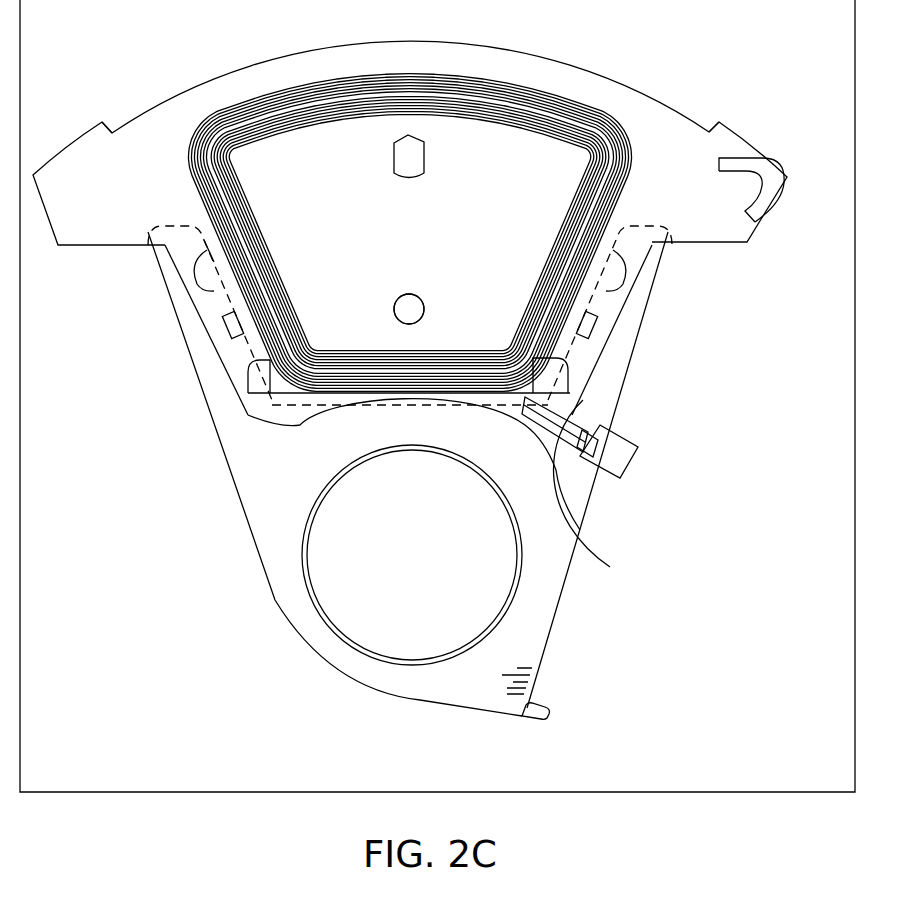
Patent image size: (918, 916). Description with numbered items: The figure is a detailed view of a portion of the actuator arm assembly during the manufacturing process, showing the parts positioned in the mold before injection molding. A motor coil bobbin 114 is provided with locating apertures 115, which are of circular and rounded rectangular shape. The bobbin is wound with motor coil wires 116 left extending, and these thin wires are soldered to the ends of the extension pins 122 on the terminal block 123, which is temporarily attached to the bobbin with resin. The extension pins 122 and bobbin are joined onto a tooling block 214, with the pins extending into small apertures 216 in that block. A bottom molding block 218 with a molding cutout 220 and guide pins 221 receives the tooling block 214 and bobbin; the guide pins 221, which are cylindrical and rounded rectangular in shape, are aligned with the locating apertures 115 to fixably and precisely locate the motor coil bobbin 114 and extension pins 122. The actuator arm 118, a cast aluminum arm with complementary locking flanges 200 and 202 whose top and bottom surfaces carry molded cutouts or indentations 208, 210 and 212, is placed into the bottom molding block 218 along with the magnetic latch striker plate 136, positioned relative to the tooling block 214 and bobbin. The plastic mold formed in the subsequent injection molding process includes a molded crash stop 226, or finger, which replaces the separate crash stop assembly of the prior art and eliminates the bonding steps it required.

The motor coil bobbin 114 is at (584, 113).
The locating apertures 115 is at (420, 297).
The motor coil wires 116 is at (533, 373).
The actuator arm 118 is at (258, 483).
The extension pins 122 is at (601, 529).
The terminal block 123 is at (583, 400).
The magnetic latch striker plate 136 is at (762, 173).
The locking flange 200 is at (623, 272).
The locking flange 202 is at (207, 253).
The indentation 208 is at (255, 378).
The indentation 210 is at (227, 332).
The indentation 212 is at (212, 290).
The tooling block 214 is at (617, 458).
The small apertures 216 is at (600, 465).
The bottom molding block 218 is at (118, 768).
The molding cutout 220 is at (177, 122).
The guide pins 221 is at (398, 300).
The molded crash stop 226 is at (65, 172).